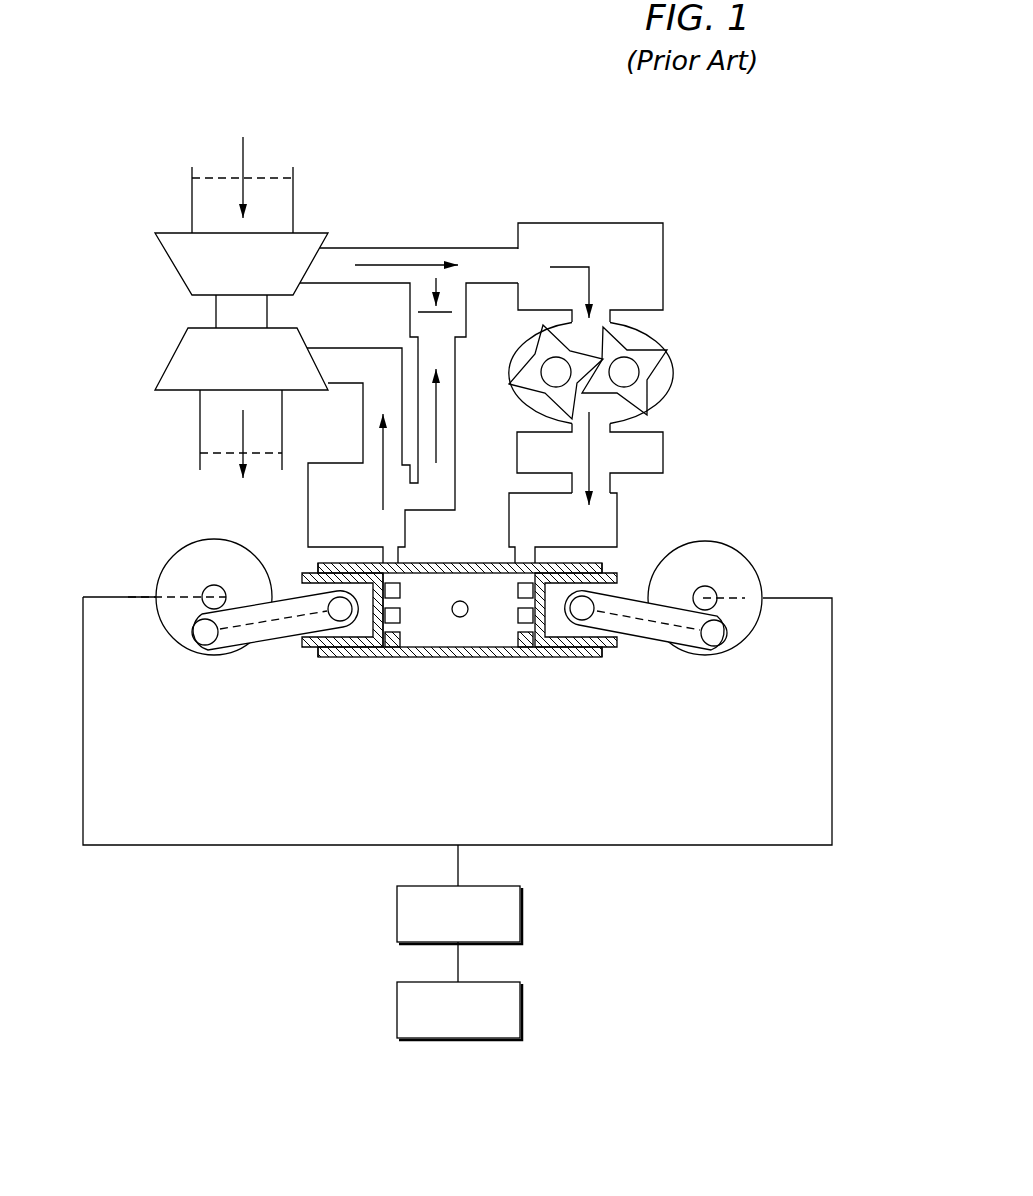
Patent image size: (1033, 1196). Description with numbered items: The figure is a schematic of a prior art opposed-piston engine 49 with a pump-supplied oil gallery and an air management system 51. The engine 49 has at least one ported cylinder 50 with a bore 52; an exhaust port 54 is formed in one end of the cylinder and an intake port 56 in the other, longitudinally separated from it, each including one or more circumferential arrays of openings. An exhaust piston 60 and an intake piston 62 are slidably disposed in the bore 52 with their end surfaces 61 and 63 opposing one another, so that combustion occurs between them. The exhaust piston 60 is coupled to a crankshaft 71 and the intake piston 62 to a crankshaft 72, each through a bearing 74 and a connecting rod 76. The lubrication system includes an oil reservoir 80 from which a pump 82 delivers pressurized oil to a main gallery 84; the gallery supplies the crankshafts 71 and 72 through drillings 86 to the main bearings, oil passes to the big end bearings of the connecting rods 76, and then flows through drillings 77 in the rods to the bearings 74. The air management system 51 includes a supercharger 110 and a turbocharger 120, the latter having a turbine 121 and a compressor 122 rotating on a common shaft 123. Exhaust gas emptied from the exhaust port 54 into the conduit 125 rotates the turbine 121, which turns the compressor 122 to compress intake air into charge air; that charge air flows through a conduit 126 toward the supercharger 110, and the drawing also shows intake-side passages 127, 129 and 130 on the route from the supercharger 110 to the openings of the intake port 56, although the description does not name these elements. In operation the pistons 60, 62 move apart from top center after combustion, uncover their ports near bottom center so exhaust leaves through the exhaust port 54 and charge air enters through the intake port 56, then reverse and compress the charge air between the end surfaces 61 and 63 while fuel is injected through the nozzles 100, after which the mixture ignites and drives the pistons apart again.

The opposed-piston engine 49 is at (742, 457).
The ported cylinder 50 is at (437, 563).
The air management system 51 is at (436, 134).
The bore 52 is at (478, 642).
The exhaust port 54 is at (391, 674).
The intake port 56 is at (532, 675).
The exhaust piston 60 is at (305, 650).
The end surface of exhaust piston 61 is at (393, 590).
The intake piston 62 is at (615, 567).
The end surface of intake piston 63 is at (527, 590).
The crankshaft 71 is at (212, 655).
The crankshaft 72 is at (703, 653).
The bearing 74 is at (336, 609).
The connecting rod 76 is at (258, 643).
The drillings 77 is at (277, 618).
The oil reservoir 80 is at (520, 1010).
The pump 82 is at (520, 913).
The main gallery 84 is at (233, 845).
The drillings 86 is at (180, 597).
The nozzle 100 is at (466, 602).
The supercharger 110 is at (660, 333).
The turbocharger 120 is at (178, 309).
The turbine 121 is at (175, 352).
The compressor 122 is at (172, 258).
The common shaft 123 is at (268, 312).
The conduit 125 is at (363, 412).
The conduit 126 is at (400, 248).
The intake manifold 127 is at (663, 277).
The intake passage 129 is at (663, 448).
The intake plenum 130 is at (617, 522).